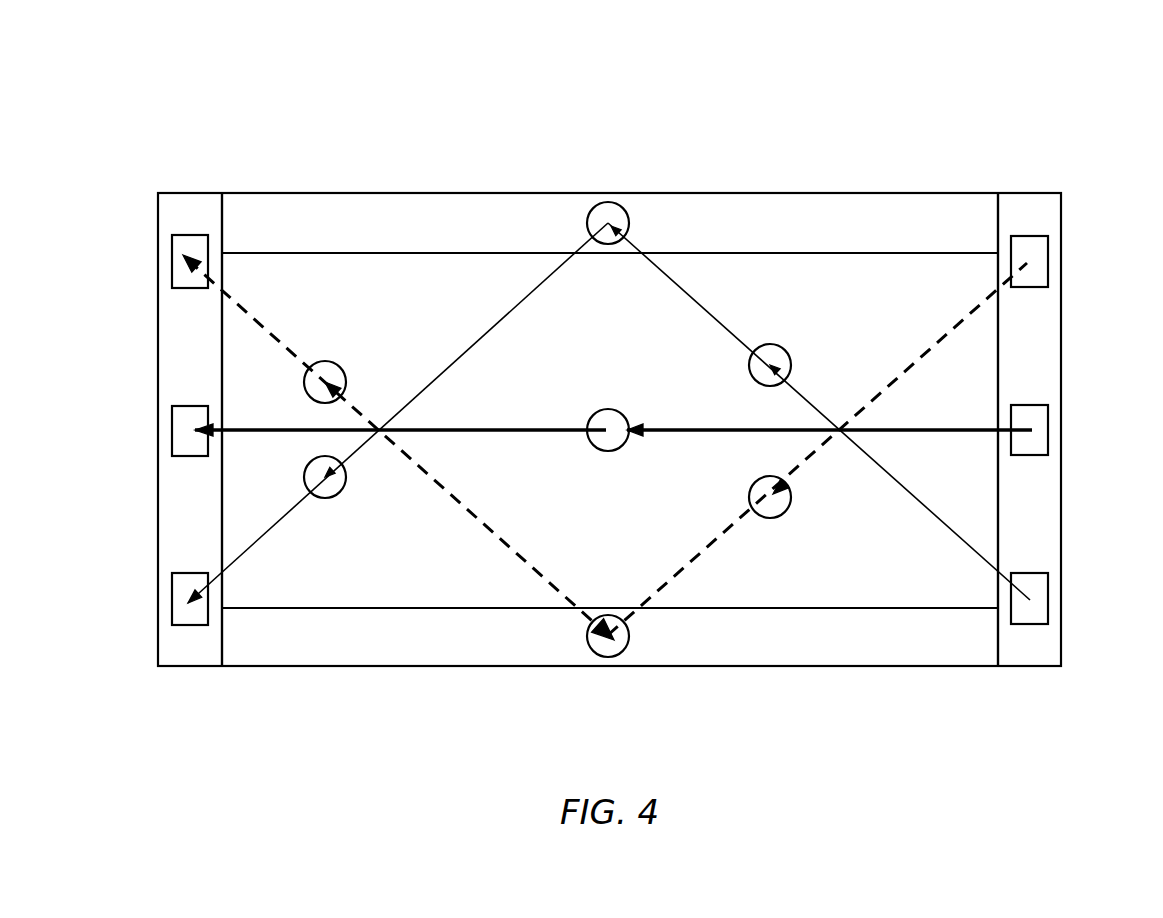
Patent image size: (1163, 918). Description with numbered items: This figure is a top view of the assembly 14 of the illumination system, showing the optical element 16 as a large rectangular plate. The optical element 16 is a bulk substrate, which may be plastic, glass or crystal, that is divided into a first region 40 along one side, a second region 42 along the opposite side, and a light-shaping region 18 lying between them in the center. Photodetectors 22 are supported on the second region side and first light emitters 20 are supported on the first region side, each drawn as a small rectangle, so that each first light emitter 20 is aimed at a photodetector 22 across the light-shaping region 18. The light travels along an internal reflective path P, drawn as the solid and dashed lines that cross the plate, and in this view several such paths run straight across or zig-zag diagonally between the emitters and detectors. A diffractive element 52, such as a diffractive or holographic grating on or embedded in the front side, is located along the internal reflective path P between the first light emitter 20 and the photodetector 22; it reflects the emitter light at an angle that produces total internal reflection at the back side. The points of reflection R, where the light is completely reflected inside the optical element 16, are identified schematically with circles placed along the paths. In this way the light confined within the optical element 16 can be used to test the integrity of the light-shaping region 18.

The assembly 14 is at (914, 96).
The optical element 16 is at (250, 525).
The light-shaping region 18 is at (623, 363).
The first light emitter 20 is at (1048, 252).
The photodetector 22 is at (172, 250).
The first region 40 is at (970, 360).
The second region 42 is at (247, 360).
The diffractive element 52 is at (362, 228).
The points of reflection R is at (608, 202).
The internal reflective path P is at (898, 378).